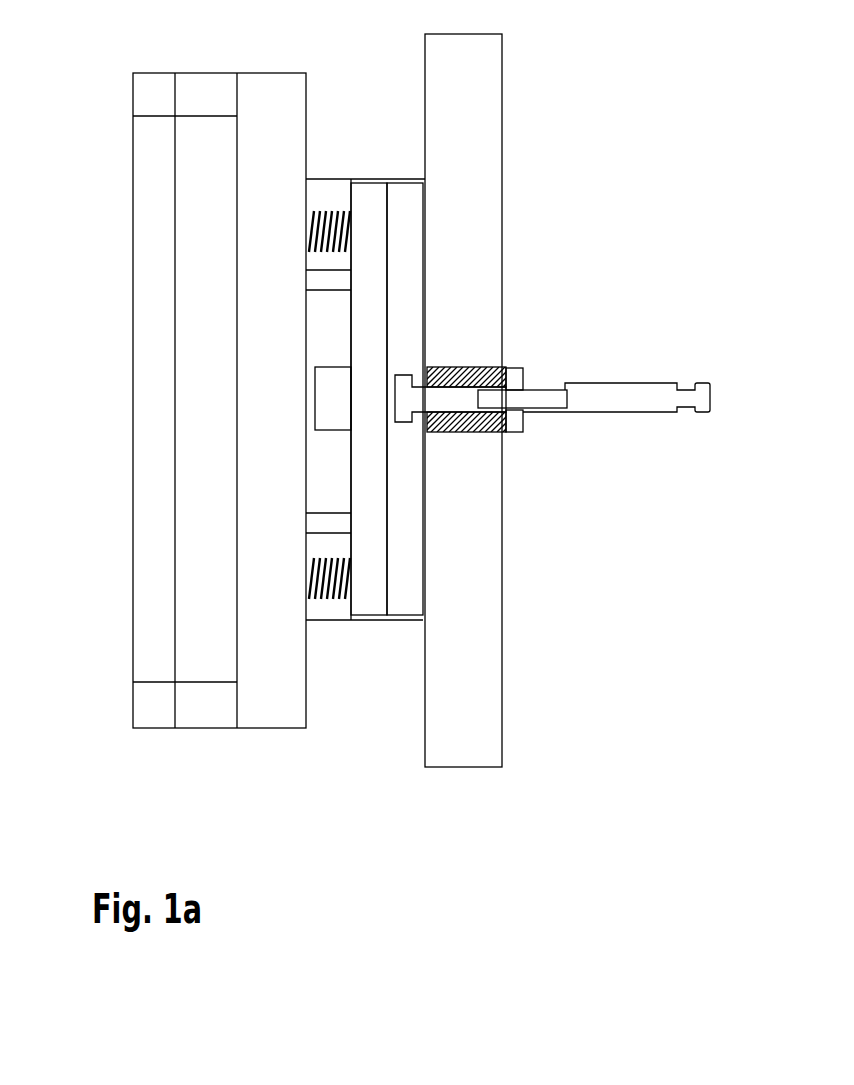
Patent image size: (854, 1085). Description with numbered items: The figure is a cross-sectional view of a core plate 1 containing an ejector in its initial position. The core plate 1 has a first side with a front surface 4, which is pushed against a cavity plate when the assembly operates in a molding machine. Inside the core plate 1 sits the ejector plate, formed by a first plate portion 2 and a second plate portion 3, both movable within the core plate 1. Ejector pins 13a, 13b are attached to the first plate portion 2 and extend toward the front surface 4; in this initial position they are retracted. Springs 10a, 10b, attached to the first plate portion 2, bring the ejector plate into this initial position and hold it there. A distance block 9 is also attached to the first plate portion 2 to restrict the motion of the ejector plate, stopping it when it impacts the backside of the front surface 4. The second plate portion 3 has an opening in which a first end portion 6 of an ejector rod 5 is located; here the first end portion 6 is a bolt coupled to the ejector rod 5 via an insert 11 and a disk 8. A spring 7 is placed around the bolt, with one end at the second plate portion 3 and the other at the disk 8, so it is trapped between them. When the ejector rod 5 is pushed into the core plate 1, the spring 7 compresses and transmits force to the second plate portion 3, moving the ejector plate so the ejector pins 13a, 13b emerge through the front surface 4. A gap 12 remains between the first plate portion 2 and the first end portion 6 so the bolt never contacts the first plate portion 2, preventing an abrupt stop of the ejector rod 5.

The core plate 1 is at (585, 110).
The first plate portion 2 is at (372, 205).
The second plate portion 3 is at (398, 248).
The front surface 4 is at (133, 327).
The ejector rod 5 is at (670, 413).
The first end portion 6 is at (480, 362).
The spring 7 is at (487, 427).
The disk 8 is at (523, 430).
The distance block 9 is at (313, 410).
The spring 10a is at (332, 602).
The spring 10b is at (343, 210).
The insert 11 is at (560, 385).
The gap 12 is at (392, 418).
The ejector pin 13a is at (307, 278).
The ejector pin 13b is at (322, 525).